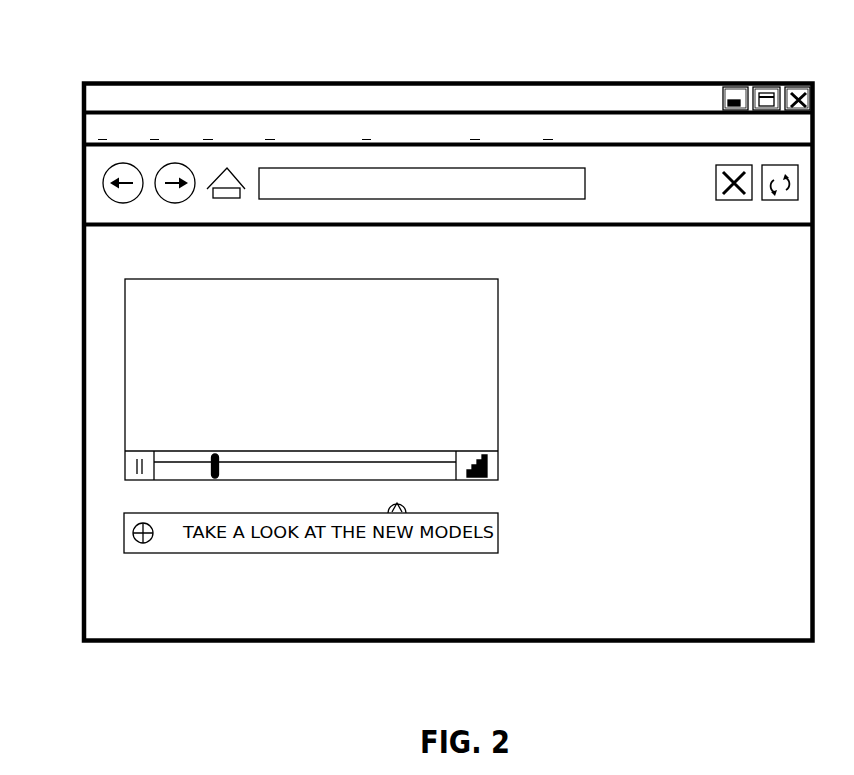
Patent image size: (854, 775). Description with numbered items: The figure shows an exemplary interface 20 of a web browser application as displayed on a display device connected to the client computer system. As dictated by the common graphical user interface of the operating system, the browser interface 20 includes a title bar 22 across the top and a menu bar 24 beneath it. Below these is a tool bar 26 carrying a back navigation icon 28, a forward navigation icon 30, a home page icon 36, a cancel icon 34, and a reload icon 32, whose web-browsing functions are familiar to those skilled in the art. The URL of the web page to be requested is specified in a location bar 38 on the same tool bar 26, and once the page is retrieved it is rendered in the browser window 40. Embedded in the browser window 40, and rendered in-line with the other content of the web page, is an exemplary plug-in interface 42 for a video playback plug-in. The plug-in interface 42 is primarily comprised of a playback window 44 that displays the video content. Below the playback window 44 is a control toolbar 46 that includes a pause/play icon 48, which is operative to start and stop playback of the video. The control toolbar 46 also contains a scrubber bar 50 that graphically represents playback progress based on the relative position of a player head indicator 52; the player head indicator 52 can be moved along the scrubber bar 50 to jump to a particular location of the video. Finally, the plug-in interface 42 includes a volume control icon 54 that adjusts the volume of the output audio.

The browser interface 20 is at (815, 393).
The title bar 22 is at (413, 97).
The menu bar 24 is at (90, 123).
The tool bar 26 is at (793, 154).
The back navigation icon 28 is at (118, 196).
The forward navigation icon 30 is at (174, 201).
The reload icon 32 is at (798, 185).
The cancel icon 34 is at (740, 202).
The home page icon 36 is at (214, 172).
The location bar 38 is at (586, 178).
The browser window 40 is at (727, 603).
The plug-in interface 42 is at (498, 410).
The playback window 44 is at (400, 430).
The control toolbar 46 is at (127, 457).
The pause/play icon 48 is at (130, 475).
The scrubber bar 50 is at (180, 463).
The player head indicator 52 is at (215, 482).
The volume control icon 54 is at (487, 463).